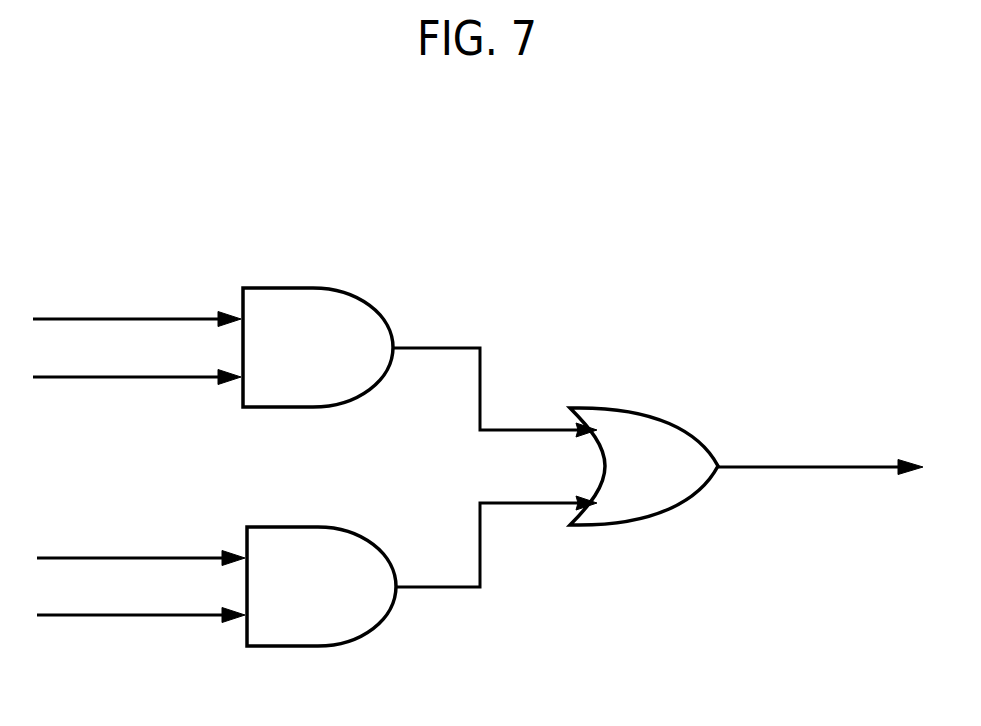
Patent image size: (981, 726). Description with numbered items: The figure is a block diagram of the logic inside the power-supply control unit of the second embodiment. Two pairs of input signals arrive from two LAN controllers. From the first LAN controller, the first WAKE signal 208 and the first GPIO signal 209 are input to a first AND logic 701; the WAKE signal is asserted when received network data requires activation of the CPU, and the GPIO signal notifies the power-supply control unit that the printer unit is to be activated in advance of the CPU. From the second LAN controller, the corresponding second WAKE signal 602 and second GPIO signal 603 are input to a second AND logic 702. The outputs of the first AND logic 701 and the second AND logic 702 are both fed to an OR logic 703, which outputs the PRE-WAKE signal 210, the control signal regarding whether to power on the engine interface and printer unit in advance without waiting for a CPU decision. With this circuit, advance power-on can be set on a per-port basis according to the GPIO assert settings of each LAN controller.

The WAKE signal (1) 208 is at (163, 316).
The GPIO signal (1) 209 is at (176, 380).
The WAKE signal (2) 602 is at (166, 555).
The GPIO signal (2) 603 is at (182, 618).
The AND logic (1) 701 is at (344, 290).
The AND logic (2) 702 is at (351, 530).
The OR logic 703 is at (633, 412).
The PRE-WAKE signal 210 is at (732, 465).